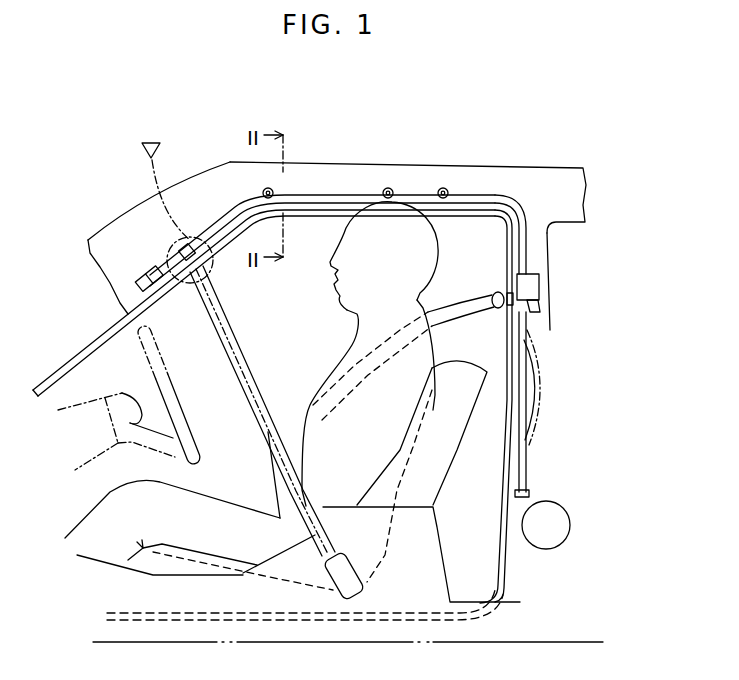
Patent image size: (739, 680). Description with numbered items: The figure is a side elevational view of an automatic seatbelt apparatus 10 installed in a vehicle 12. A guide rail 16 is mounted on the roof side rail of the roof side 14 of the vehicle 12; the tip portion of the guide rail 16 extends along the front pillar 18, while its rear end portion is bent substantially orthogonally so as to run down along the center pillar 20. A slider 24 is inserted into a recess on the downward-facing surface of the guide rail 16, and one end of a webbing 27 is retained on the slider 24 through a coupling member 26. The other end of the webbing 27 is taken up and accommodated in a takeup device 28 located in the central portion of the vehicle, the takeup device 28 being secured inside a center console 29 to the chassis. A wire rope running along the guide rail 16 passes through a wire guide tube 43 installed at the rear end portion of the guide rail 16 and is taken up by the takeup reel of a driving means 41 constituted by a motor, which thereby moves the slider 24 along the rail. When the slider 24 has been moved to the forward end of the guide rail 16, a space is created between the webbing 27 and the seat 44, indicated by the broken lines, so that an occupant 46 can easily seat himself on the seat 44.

The automatic seatbelt apparatus 10 is at (342, 188).
The vehicle 12 is at (477, 150).
The roof side 14 is at (246, 180).
The guide rail 16 is at (380, 195).
The front pillar 18 is at (123, 233).
The center pillar 20 is at (540, 253).
The slider 24 is at (497, 290).
The coupling member 26 is at (497, 312).
The webbing 27 is at (455, 308).
The takeup device 28 is at (343, 577).
The center console 29 is at (420, 557).
The driving means 41 is at (572, 532).
The wire guide tube 43 is at (533, 477).
The seat 44 is at (467, 423).
The occupant 46 is at (340, 310).